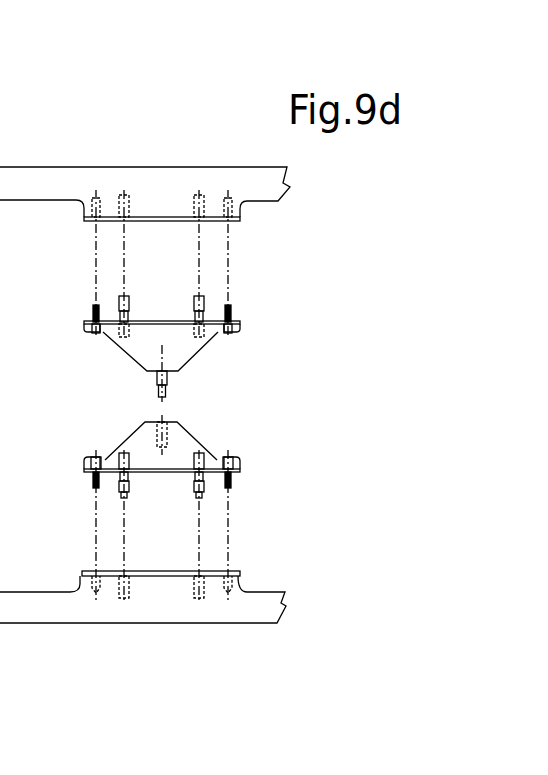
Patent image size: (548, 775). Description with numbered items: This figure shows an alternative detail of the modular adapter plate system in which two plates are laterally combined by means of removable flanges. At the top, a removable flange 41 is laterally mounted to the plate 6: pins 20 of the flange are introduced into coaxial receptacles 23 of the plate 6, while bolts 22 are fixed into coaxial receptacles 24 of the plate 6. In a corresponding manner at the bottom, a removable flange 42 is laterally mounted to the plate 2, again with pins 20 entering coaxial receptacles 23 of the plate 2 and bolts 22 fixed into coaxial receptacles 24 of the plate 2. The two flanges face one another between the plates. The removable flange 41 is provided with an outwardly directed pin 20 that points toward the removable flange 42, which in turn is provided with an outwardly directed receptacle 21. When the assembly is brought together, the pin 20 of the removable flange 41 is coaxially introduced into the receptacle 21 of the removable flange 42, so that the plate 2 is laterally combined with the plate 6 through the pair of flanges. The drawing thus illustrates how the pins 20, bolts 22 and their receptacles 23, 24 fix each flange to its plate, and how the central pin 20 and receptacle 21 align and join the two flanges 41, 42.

The plate 6 is at (143, 153).
The plate 2 is at (250, 626).
The pin 20 is at (190, 302).
The receptacle 21 is at (165, 412).
The bolt 22 is at (90, 310).
The receptacle 23 is at (113, 199).
The receptacle 24 is at (78, 212).
The removable flange 41 is at (121, 350).
The removable flange 42 is at (125, 440).